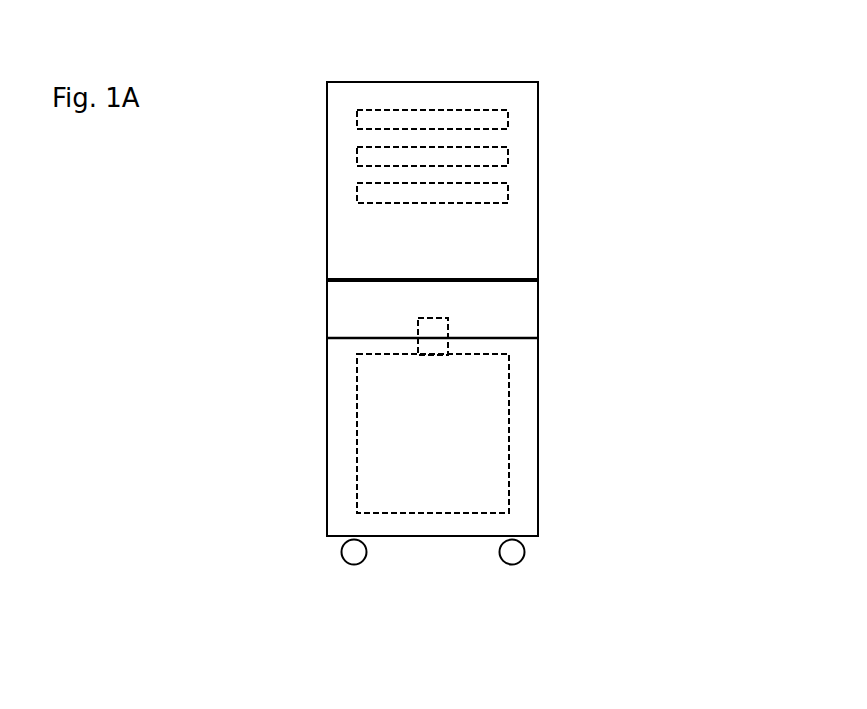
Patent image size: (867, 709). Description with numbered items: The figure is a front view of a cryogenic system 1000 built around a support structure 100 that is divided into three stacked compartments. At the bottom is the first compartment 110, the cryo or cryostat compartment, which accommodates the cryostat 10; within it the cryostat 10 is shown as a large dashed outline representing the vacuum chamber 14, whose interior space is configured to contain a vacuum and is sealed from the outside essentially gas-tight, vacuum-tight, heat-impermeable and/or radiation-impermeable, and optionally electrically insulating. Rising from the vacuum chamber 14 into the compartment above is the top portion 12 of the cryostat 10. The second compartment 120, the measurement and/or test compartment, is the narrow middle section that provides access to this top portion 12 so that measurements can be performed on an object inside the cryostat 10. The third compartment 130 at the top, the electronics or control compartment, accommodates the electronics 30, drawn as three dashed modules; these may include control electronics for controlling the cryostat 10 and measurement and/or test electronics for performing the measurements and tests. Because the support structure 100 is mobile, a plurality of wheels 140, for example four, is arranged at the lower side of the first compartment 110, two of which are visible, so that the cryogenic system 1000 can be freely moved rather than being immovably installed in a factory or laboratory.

The cryogenic system 1000 is at (639, 23).
The support structure 100 is at (614, 89).
The third compartment 130 is at (538, 188).
The second compartment 120 is at (538, 308).
The first compartment 110 is at (538, 434).
The wheels 140 is at (341, 551).
The electronics 30 is at (357, 123).
The cryostat 10 is at (338, 392).
The top portion 12 is at (418, 328).
The vacuum chamber 14 is at (357, 443).